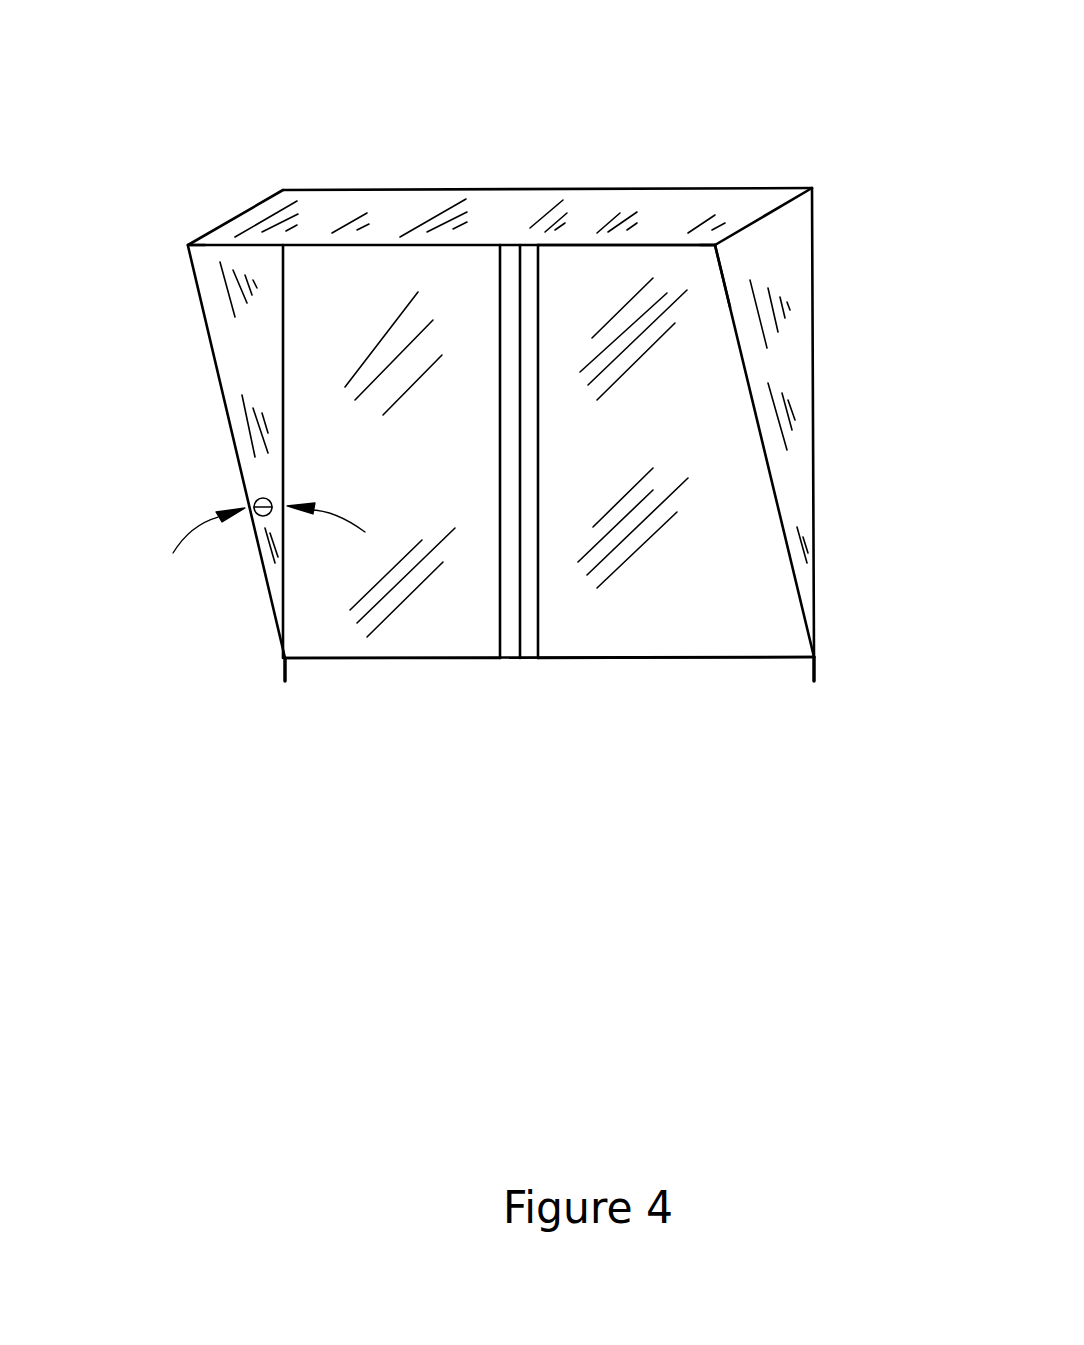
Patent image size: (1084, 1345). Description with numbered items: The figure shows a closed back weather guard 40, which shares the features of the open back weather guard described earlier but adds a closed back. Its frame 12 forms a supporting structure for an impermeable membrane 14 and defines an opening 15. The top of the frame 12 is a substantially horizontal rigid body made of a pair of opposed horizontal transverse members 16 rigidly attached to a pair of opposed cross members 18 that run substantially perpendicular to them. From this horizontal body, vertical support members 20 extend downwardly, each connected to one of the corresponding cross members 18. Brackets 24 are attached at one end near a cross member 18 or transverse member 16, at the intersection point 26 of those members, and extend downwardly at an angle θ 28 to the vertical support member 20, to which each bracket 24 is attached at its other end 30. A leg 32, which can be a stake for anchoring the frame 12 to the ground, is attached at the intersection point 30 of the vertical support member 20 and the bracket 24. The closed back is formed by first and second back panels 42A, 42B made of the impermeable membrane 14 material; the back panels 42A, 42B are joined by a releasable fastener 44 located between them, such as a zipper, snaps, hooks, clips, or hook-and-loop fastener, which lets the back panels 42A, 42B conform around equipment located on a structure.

The closed back weather guard 40 is at (745, 45).
The frame 12 is at (812, 212).
The impermeable membrane 14 is at (582, 257).
The opening 15 is at (714, 548).
The horizontal transverse member 16 is at (453, 245).
The cross member 18 is at (233, 217).
The vertical support member 20 is at (283, 370).
The bracket 24 is at (233, 447).
The intersection point 26 is at (186, 246).
The angle θ 28 is at (195, 533).
The other end 30 is at (283, 655).
The leg 32 is at (290, 672).
The first back panel 42A is at (410, 637).
The second back panel 42B is at (639, 637).
The releasable fastener 44 is at (530, 638).